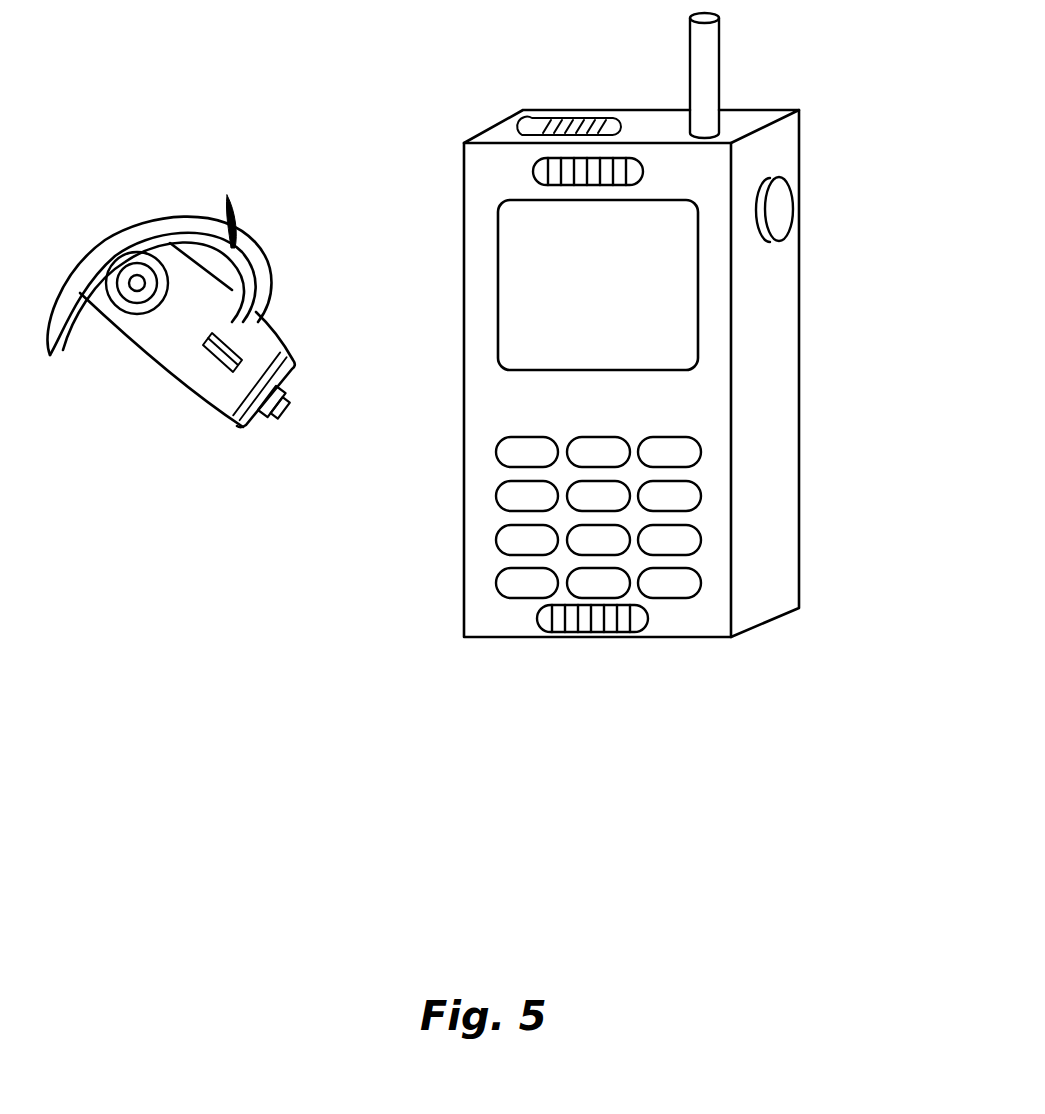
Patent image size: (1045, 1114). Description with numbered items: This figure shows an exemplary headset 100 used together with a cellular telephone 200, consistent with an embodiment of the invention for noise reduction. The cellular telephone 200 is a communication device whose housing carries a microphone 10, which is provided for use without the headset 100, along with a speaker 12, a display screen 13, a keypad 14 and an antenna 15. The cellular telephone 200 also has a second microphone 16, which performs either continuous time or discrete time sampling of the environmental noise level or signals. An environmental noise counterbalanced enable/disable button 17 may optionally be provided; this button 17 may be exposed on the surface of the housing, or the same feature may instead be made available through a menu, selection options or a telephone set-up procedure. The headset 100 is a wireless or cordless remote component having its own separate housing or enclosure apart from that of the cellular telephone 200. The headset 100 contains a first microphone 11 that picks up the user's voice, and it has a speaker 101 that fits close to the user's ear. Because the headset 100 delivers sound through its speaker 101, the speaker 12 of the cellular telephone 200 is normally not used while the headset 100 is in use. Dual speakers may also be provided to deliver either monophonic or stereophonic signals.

The cellular telephone 200 is at (668, 354).
The microphone 10 is at (597, 621).
The first microphone 11 is at (263, 423).
The speaker 12 is at (602, 185).
The display screen 13 is at (622, 348).
The keypad 14 is at (488, 549).
The antenna 15 is at (717, 75).
The second microphone 16 is at (573, 117).
The environmental noise counterbalanced enable/disable button 17 is at (780, 190).
The headset 100 is at (175, 335).
The speaker 101 is at (135, 288).